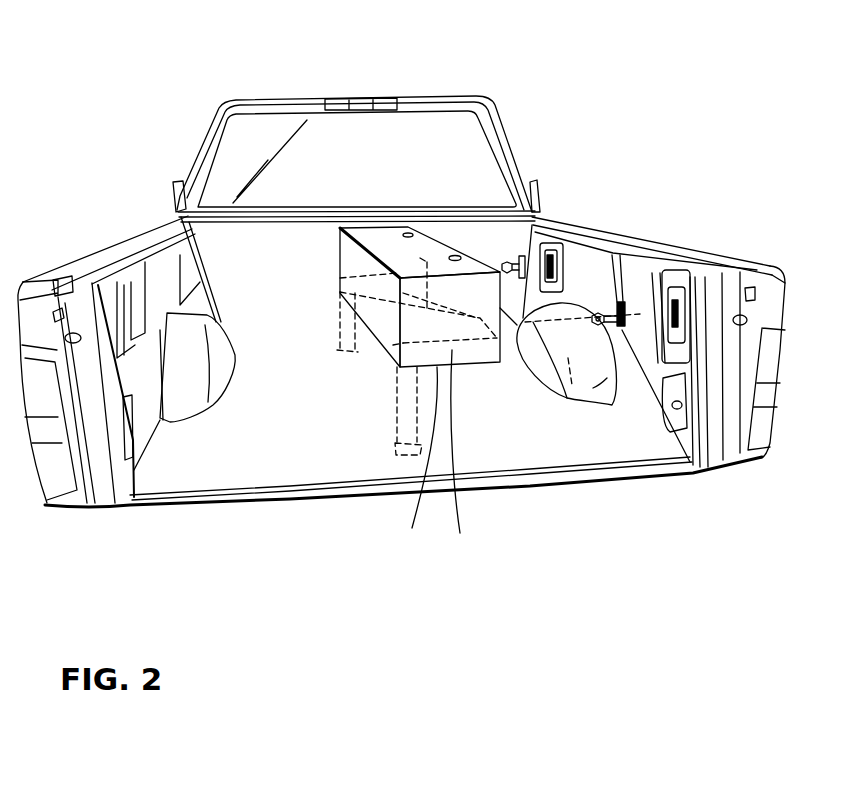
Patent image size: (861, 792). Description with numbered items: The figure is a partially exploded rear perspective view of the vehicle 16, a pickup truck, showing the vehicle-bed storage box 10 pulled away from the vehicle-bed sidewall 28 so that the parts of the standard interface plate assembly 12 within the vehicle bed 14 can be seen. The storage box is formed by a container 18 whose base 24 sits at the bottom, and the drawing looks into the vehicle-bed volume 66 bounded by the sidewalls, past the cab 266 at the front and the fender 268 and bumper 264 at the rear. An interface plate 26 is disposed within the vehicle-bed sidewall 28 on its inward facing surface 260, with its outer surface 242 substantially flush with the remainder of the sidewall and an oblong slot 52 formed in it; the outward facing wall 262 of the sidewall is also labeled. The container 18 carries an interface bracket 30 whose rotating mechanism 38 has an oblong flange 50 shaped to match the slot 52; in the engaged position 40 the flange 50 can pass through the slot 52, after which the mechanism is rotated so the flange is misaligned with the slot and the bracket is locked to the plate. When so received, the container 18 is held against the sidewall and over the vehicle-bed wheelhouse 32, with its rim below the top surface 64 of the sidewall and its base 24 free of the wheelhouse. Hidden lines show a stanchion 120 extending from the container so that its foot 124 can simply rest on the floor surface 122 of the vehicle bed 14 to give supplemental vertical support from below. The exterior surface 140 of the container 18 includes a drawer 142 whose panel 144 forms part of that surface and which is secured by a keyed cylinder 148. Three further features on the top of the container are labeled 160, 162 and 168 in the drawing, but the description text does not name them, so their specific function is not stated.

The vehicle-bed storage box 10 is at (470, 195).
The standard interface plate assembly 12 is at (545, 240).
The vehicle bed 14 is at (207, 257).
The vehicle 16 is at (421, 82).
The container 18 is at (462, 454).
The base 24 is at (418, 459).
The interface plate 26 is at (562, 262).
The vehicle-bed sidewall 28 is at (624, 278).
The interface bracket 30 is at (627, 300).
The vehicle-bed wheelhouse 32 is at (585, 372).
The rotating mechanism 38 is at (583, 327).
The engaged position 40 is at (627, 344).
The oblong flange 50 is at (677, 277).
The slot 52 is at (676, 305).
The top surface 64 is at (612, 235).
The vehicle-bed volume 66 is at (299, 230).
The stanchion 120 is at (395, 422).
The floor surface 122 is at (267, 385).
The foot 124 is at (393, 455).
The exterior surface 140 is at (357, 258).
The drawer 142 is at (393, 345).
The panel 144 is at (340, 291).
The keyed cylinder 148 is at (340, 313).
The lid 160 is at (384, 234).
The hinge 162 is at (340, 229).
The latch 168 is at (441, 245).
The outer surface 242 is at (715, 263).
The inward facing surface 260 is at (238, 250).
The outward facing wall 262 is at (33, 282).
The bumper 264 is at (597, 483).
The cab 266 is at (465, 105).
The fender 268 is at (737, 467).